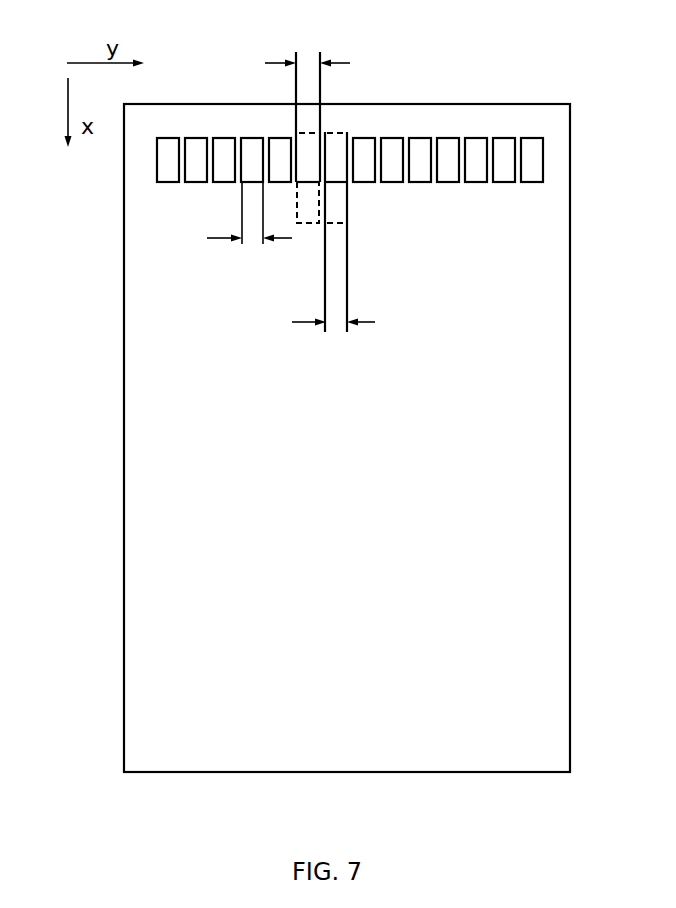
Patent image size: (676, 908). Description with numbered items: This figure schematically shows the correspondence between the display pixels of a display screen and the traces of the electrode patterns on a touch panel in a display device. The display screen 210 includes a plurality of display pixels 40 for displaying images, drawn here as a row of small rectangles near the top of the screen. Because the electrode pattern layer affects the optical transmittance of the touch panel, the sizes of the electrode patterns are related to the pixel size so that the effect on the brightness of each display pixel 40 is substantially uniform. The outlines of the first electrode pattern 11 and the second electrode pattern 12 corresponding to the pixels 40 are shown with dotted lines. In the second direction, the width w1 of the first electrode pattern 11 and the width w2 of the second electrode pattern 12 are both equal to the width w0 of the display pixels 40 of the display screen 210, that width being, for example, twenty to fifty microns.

The display screen 210 is at (160, 298).
The display pixel 40 is at (196, 138).
The first electrode pattern 11 is at (311, 223).
The second electrode pattern 12 is at (338, 133).
The width of the display pixels w0 is at (249, 229).
The width of the first electrode pattern w1 is at (307, 46).
The width of the second electrode pattern w2 is at (333, 339).